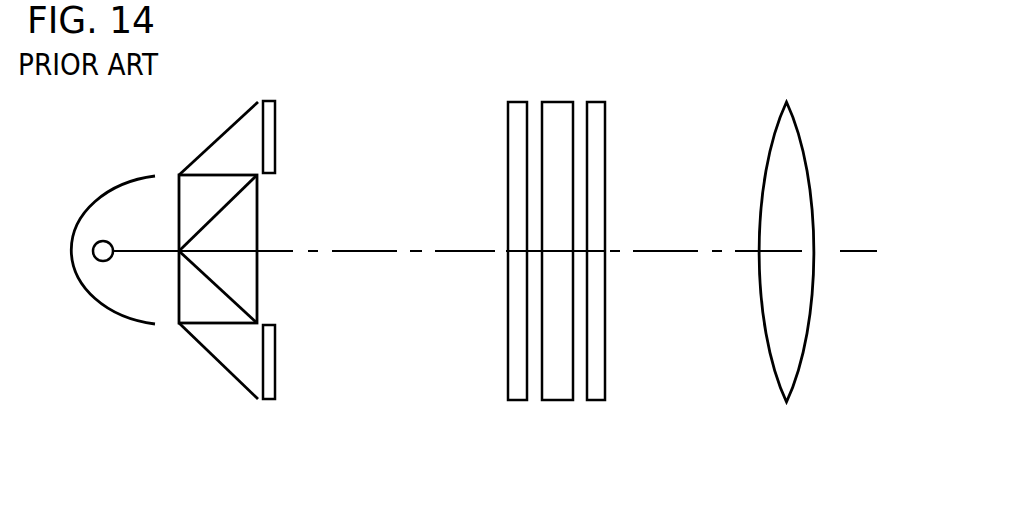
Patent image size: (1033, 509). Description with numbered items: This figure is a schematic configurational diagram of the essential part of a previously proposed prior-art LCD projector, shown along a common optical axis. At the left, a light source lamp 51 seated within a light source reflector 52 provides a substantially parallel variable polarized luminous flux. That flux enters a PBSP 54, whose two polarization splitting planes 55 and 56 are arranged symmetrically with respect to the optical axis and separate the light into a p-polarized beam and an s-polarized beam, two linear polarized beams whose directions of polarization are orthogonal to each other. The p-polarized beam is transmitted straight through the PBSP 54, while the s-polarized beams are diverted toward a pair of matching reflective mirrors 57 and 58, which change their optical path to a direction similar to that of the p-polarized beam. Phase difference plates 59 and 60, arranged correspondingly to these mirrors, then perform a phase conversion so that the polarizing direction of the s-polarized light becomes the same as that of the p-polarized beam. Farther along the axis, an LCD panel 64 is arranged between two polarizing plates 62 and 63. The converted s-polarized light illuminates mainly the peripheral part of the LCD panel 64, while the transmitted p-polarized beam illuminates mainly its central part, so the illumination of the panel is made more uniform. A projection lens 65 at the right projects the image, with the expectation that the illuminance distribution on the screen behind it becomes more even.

The light source lamp 51 is at (102, 240).
The light source reflector 52 is at (105, 325).
The PBSP 54 is at (258, 192).
The polarization splitting plane 55 is at (214, 223).
The polarization splitting plane 56 is at (216, 280).
The reflective mirror 57 is at (212, 140).
The reflective mirror 58 is at (222, 370).
The phase difference plate 59 is at (277, 128).
The phase difference plate 60 is at (277, 377).
The polarizing plate 62 is at (514, 401).
The polarizing plate 63 is at (591, 401).
The LCD panel 64 is at (545, 100).
The projection lens 65 is at (760, 178).